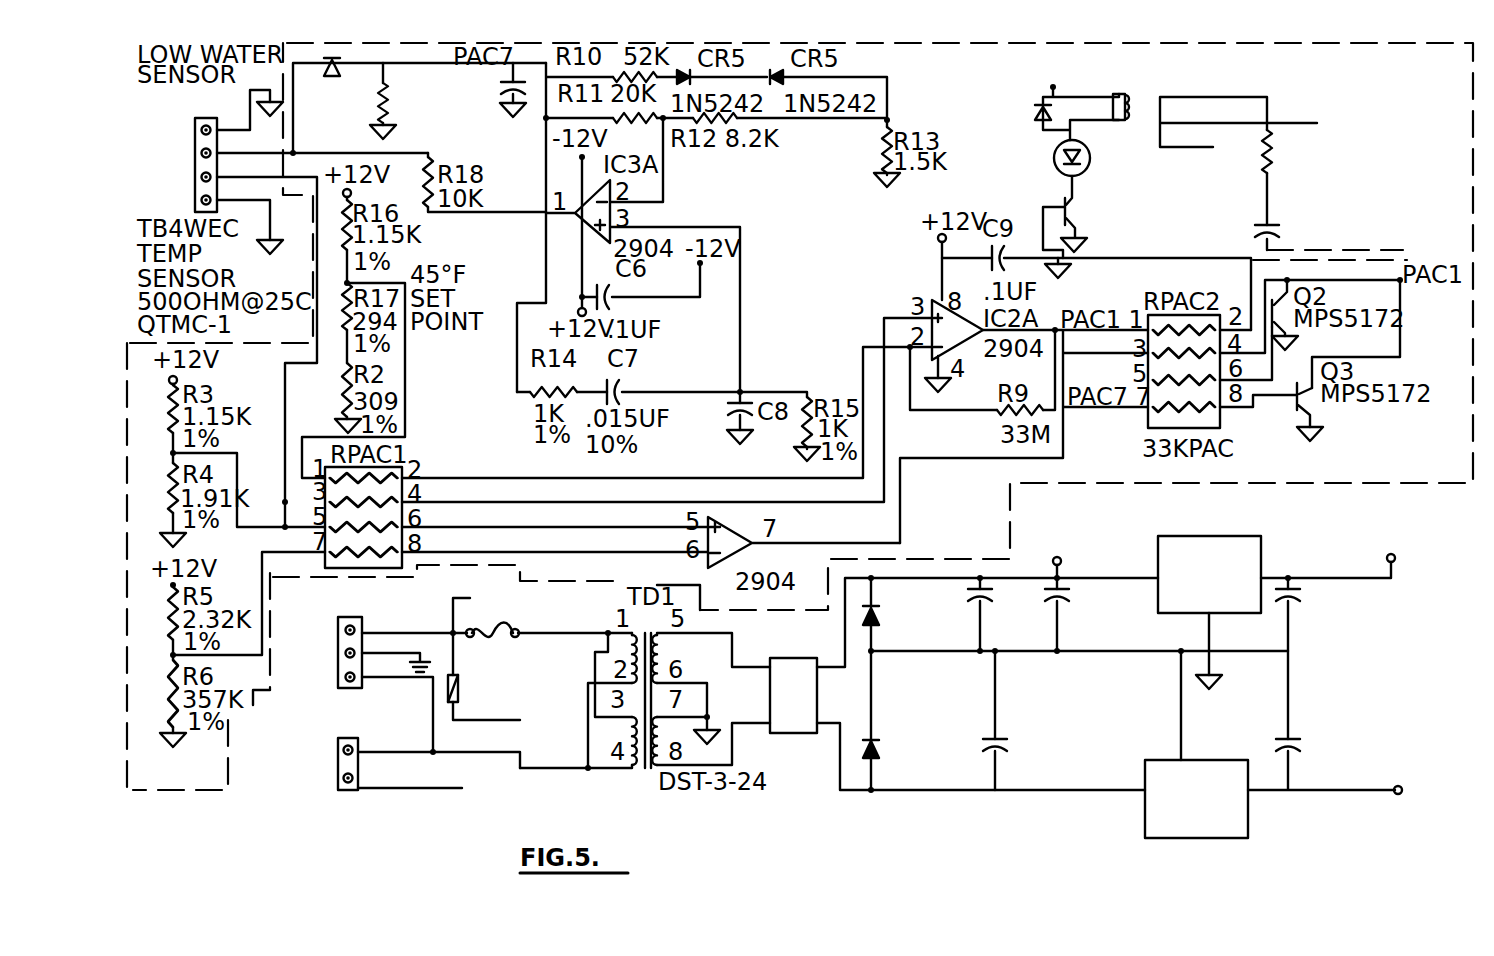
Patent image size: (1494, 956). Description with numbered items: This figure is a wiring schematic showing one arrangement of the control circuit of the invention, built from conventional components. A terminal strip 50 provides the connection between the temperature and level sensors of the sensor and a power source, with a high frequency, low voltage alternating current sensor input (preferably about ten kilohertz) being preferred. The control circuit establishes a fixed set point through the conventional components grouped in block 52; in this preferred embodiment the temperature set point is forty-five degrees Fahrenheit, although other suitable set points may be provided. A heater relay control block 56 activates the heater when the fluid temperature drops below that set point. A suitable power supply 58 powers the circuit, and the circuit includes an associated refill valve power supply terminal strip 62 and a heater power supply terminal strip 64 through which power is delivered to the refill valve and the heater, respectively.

The terminal strip 50 is at (184, 169).
The fixed set point block 52 is at (410, 45).
The heater relay control block 56 is at (1183, 52).
The power supply 58 is at (807, 811).
The refill valve power supply terminal strip 62 is at (337, 672).
The heater power supply terminal strip 64 is at (338, 760).